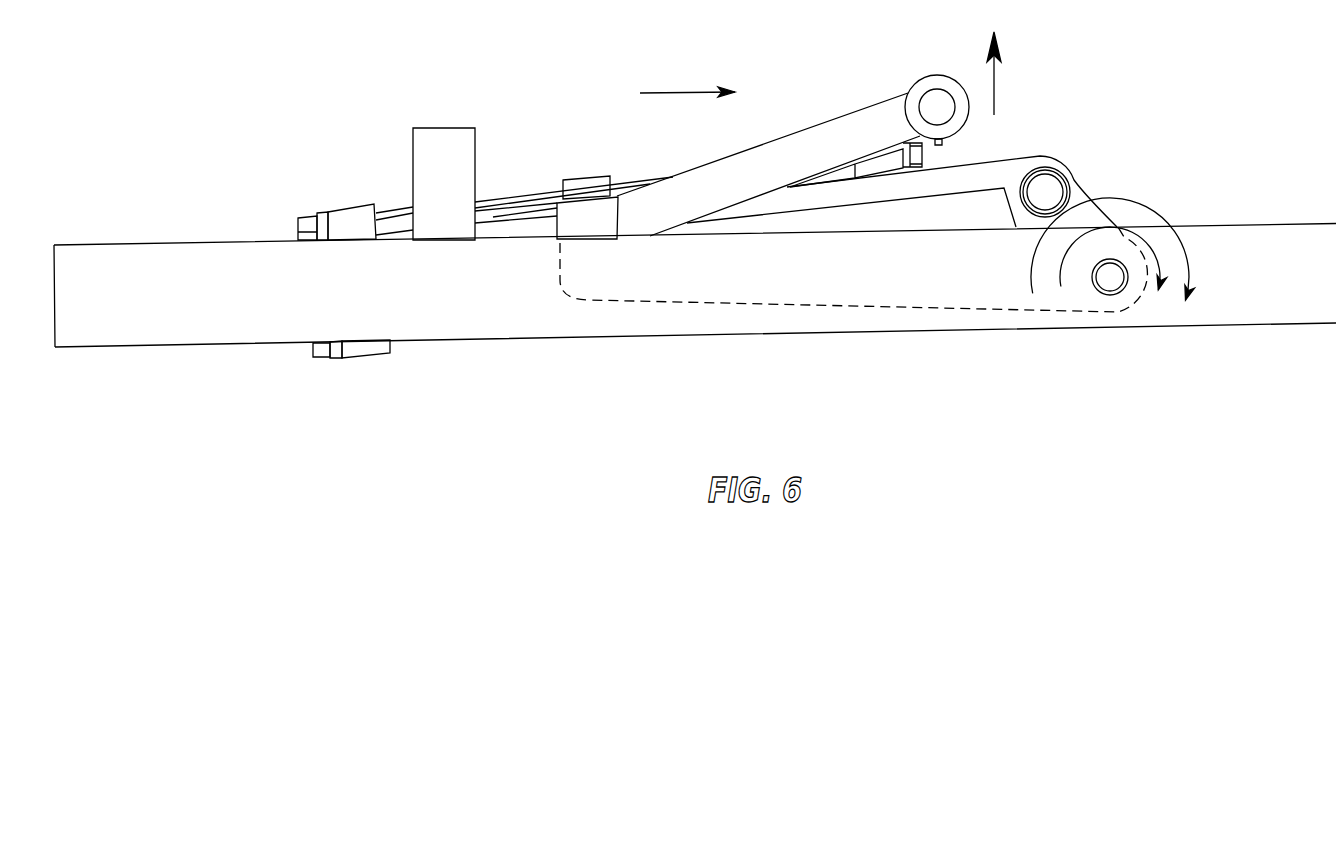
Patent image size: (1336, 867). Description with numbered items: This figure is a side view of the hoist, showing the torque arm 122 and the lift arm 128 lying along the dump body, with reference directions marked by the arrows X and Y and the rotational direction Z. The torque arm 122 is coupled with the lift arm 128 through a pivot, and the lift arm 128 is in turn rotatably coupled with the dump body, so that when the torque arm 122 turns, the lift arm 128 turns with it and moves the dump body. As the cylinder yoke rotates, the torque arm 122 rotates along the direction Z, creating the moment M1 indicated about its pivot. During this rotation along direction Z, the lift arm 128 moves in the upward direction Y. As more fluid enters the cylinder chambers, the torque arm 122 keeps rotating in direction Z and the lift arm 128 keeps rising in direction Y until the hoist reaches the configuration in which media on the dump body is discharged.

The torque arm 122 is at (1078, 185).
The lift arm 128 is at (858, 137).
The moment M1 is at (1131, 249).
The direction X is at (687, 81).
The upward direction Y is at (1001, 73).
The direction Z is at (1118, 272).